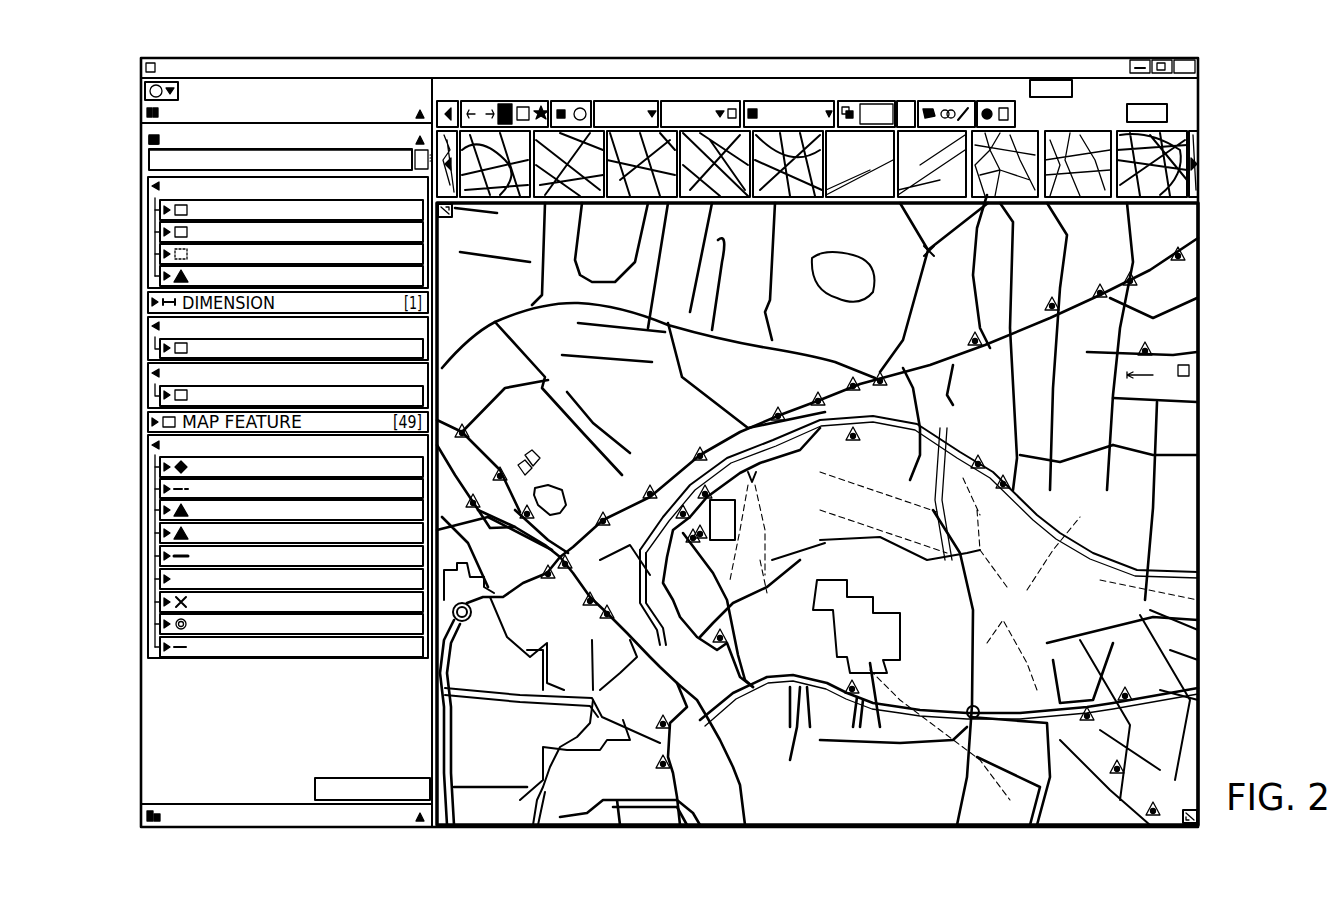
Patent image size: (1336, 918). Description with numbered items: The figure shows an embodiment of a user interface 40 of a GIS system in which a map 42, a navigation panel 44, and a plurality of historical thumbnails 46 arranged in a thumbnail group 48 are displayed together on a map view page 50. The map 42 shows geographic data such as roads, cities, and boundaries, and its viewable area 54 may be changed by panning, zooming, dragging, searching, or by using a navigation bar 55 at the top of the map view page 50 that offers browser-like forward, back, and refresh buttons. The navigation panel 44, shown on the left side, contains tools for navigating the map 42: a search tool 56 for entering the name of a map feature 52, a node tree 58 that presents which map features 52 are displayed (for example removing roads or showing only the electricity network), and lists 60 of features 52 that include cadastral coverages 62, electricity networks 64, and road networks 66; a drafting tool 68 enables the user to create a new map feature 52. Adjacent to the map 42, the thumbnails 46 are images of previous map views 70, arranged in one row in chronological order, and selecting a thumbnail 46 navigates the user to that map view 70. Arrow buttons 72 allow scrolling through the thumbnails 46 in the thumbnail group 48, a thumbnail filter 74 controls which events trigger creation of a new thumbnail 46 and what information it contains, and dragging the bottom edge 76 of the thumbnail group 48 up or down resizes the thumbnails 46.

The user interface 40 is at (118, 98).
The map 42 is at (1187, 233).
The navigation panel 44 is at (158, 706).
The historical thumbnails 46 is at (1102, 131).
The thumbnail group 48 is at (1228, 134).
The map view page 50 is at (675, 826).
The map feature 52 is at (910, 700).
The viewable area 54 is at (1180, 450).
The navigation bar 55 is at (472, 104).
The search tool 56 is at (148, 140).
The node tree 58 is at (162, 150).
The lists of features 60 is at (152, 181).
The cadastral coverages 62 is at (156, 211).
The electricity networks 64 is at (152, 370).
The road networks 66 is at (152, 441).
The drafting tool 68 is at (152, 323).
The map view 70 is at (501, 775).
The arrow buttons 72 is at (437, 130).
The thumbnail filter 74 is at (1168, 113).
The bottom edge 76 is at (832, 224).